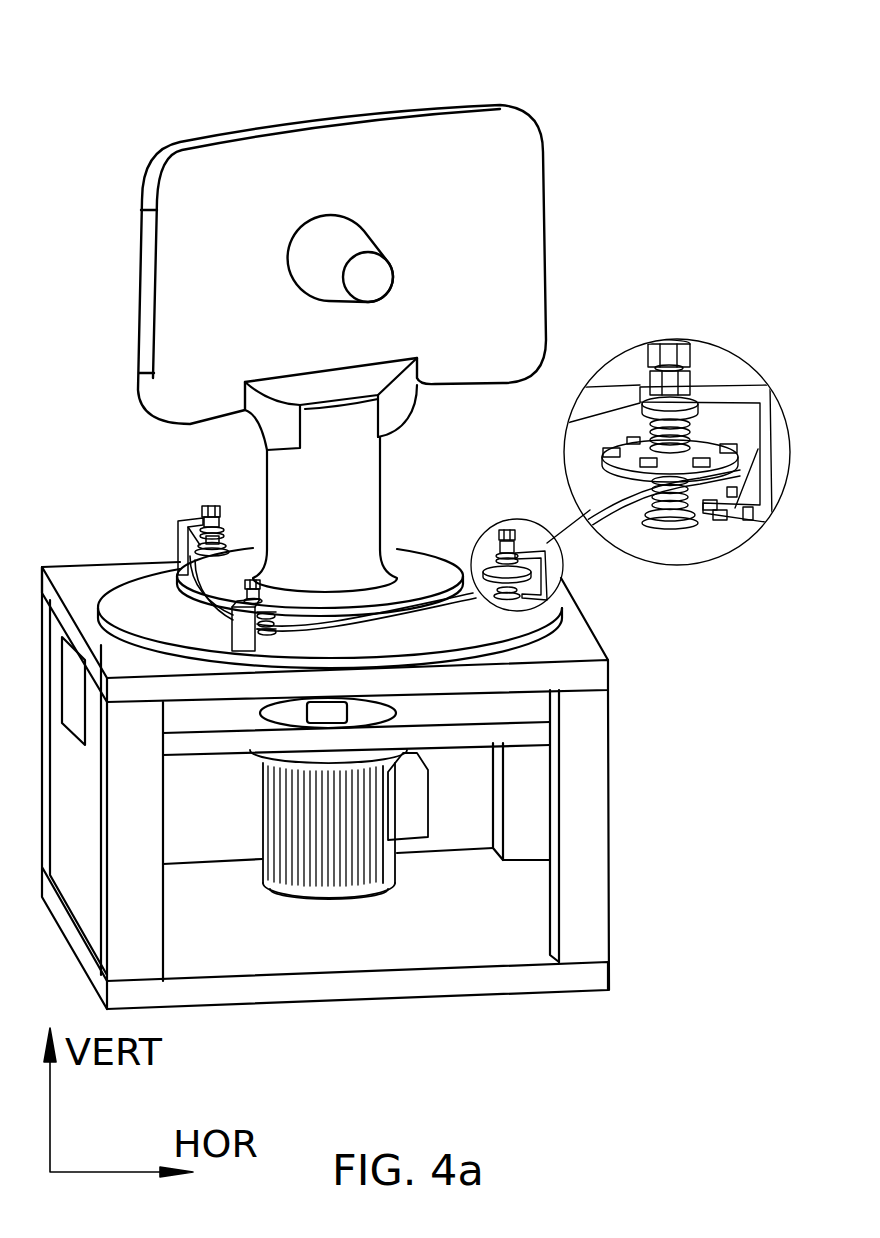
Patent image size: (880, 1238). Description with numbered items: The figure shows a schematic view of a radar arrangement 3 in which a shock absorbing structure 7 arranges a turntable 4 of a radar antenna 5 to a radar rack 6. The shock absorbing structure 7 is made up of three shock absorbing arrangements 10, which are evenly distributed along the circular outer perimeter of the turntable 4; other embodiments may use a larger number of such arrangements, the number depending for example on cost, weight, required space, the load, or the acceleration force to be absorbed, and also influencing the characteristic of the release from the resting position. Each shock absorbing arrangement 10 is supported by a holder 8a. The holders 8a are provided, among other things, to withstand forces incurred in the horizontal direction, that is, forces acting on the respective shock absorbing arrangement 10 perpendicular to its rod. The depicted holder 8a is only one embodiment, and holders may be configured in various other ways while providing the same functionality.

The radar arrangement 3 is at (675, 228).
The turntable 4 is at (478, 612).
The radar antenna 5 is at (562, 118).
The radar rack 6 is at (583, 732).
The shock absorbing structure 7 is at (158, 526).
The holder 8a is at (720, 377).
The shock absorbing arrangement 10 is at (728, 537).